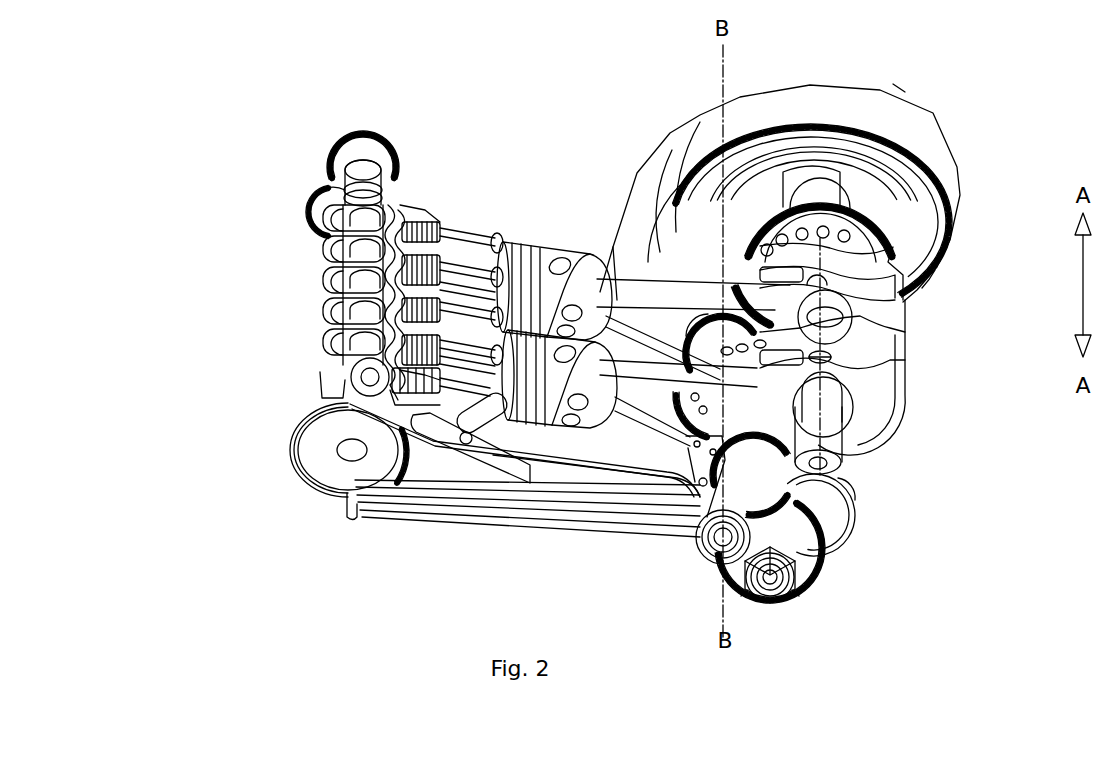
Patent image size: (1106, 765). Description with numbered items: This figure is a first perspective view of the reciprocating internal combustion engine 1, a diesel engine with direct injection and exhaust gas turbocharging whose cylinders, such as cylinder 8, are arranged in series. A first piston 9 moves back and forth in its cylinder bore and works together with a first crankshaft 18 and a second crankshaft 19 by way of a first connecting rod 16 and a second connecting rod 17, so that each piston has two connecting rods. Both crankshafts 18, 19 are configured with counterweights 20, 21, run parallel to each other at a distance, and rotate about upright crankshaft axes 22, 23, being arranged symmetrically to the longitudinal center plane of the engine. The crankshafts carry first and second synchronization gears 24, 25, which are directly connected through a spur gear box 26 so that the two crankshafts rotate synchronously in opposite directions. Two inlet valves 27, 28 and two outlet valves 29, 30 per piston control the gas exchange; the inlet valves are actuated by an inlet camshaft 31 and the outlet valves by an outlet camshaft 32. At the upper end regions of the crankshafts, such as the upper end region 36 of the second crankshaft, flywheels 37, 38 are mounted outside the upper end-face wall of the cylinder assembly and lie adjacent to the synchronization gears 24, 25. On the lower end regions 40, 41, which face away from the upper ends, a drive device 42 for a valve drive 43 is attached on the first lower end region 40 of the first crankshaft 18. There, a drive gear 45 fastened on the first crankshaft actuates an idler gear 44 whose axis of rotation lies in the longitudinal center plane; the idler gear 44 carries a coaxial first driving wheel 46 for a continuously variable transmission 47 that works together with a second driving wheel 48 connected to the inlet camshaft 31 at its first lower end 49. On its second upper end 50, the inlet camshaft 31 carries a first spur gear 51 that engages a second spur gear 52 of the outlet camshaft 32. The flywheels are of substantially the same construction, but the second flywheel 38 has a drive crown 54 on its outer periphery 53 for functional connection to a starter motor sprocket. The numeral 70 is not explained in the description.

The reciprocating internal combustion engine 1 is at (893, 86).
The cylinder 8 is at (585, 242).
The first piston 9 is at (542, 432).
The first connecting rod 16 is at (655, 330).
The second connecting rod 17 is at (628, 266).
The first crankshaft 18 is at (797, 418).
The second crankshaft 19 is at (833, 415).
The counterweight 20 is at (857, 527).
The counterweight 21 is at (907, 413).
The crankshaft axis 22 is at (777, 611).
The crankshaft axis 23 is at (839, 440).
The first synchronization gear 24 is at (717, 350).
The second synchronization gear 25 is at (797, 225).
The spur gear box 26 is at (745, 318).
The inlet valve 27 is at (464, 272).
The inlet valve 28 is at (471, 313).
The outlet valve 29 is at (498, 290).
The outlet valve 30 is at (493, 255).
The inlet camshaft 31 is at (318, 265).
The outlet camshaft 32 is at (393, 187).
The upper end region 36 is at (848, 178).
The flywheel 37 is at (656, 190).
The second flywheel 38 is at (925, 112).
The first lower end region 40 is at (746, 607).
The lower end region 41 is at (859, 473).
The drive device 42 is at (766, 609).
The valve drive 43 is at (508, 528).
The idler gear 44 is at (755, 476).
The drive gear 45 is at (817, 567).
The first driving wheel 46 is at (698, 432).
The continuously variable transmission 47 is at (292, 455).
The second driving wheel 48 is at (346, 466).
The first lower end 49 is at (302, 490).
The second upper end 50 is at (318, 178).
The first spur gear 51 is at (302, 205).
The second spur gear 52 is at (361, 130).
The outer periphery 53 is at (957, 138).
The drive crown 54 is at (960, 232).
The camshaft bearing bracket 70 is at (306, 390).